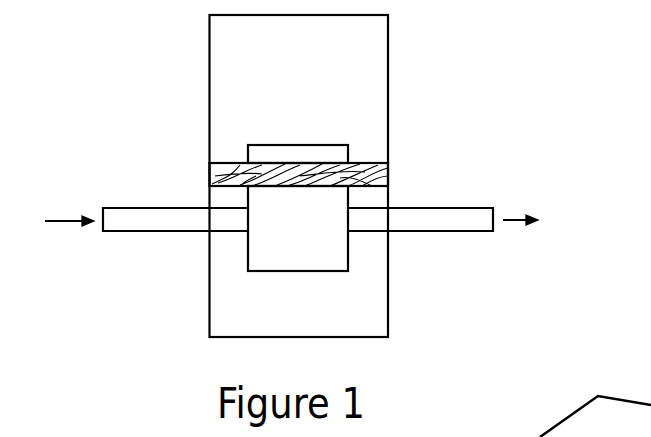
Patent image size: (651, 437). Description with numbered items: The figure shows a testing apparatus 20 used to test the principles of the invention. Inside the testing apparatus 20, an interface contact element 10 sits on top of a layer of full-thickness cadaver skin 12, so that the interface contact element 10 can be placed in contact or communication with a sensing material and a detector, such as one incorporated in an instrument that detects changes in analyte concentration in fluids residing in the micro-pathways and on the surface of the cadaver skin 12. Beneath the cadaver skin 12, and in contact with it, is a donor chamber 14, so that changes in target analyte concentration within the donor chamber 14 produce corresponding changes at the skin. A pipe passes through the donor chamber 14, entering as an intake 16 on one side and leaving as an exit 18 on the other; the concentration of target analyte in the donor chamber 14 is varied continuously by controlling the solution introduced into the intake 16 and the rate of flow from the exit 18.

The interface contact element 10 is at (307, 145).
The full-thickness cadaver skin 12 is at (375, 181).
The donor chamber 14 is at (348, 246).
The intake 16 is at (102, 212).
The exit 18 is at (493, 224).
The testing apparatus 20 is at (388, 48).